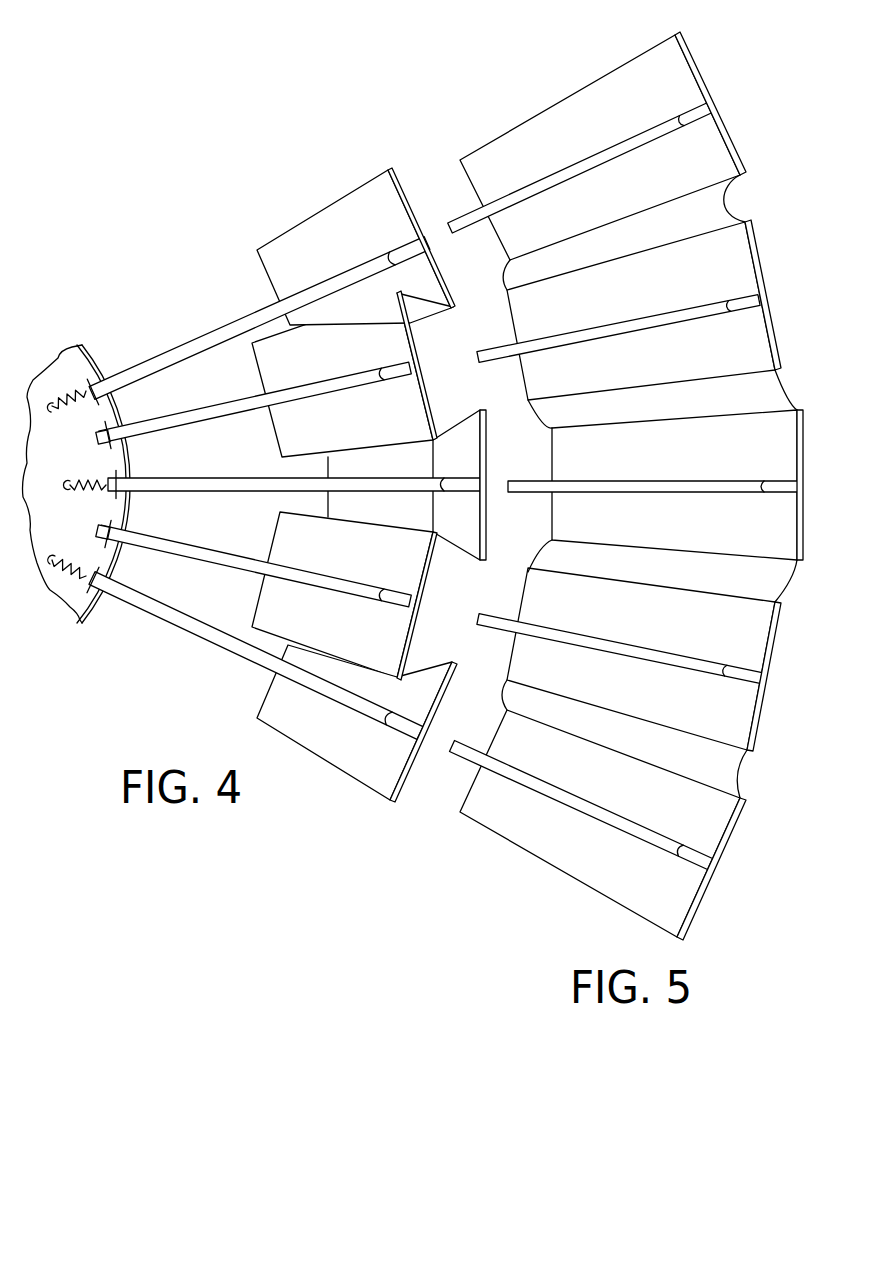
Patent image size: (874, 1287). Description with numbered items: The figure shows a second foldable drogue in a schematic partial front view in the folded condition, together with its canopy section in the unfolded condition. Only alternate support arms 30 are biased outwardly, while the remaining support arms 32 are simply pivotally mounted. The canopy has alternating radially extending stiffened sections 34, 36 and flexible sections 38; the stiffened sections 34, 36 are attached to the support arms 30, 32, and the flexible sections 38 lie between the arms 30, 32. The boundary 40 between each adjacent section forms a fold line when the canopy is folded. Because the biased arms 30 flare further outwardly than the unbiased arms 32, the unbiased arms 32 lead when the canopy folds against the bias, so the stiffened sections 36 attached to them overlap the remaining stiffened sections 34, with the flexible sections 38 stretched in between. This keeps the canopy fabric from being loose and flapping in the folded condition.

In FIG. 4, the support arm 30 is at (163, 362).
In FIG. 5, the support arm 30 is at (660, 486).
In FIG. 4, the support arm 32 is at (208, 418).
In FIG. 5, the support arm 32 is at (622, 322).
In FIG. 4, the stiffened section 34 is at (425, 474).
In FIG. 5, the stiffened section 34 is at (713, 459).
In FIG. 4, the stiffened section 36 is at (341, 430).
In FIG. 5, the stiffened section 36 is at (680, 282).
In FIG. 4, the flexible section 38 is at (444, 550).
In FIG. 5, the flexible section 38 is at (777, 398).
In FIG. 5, the boundary 40 is at (742, 200).